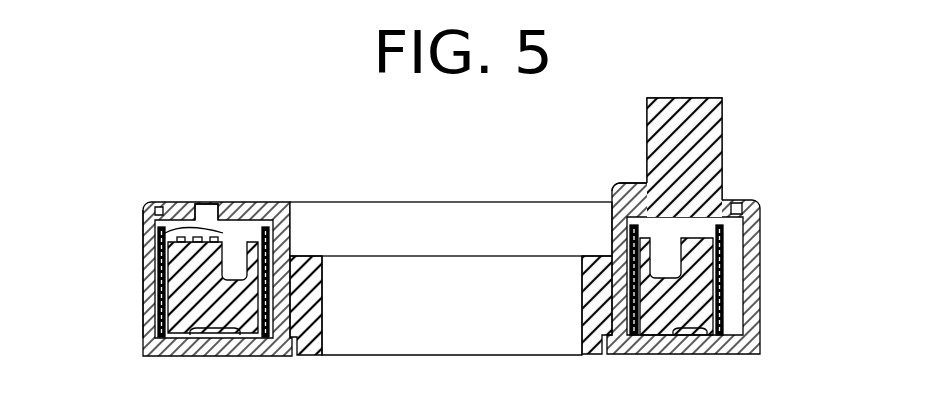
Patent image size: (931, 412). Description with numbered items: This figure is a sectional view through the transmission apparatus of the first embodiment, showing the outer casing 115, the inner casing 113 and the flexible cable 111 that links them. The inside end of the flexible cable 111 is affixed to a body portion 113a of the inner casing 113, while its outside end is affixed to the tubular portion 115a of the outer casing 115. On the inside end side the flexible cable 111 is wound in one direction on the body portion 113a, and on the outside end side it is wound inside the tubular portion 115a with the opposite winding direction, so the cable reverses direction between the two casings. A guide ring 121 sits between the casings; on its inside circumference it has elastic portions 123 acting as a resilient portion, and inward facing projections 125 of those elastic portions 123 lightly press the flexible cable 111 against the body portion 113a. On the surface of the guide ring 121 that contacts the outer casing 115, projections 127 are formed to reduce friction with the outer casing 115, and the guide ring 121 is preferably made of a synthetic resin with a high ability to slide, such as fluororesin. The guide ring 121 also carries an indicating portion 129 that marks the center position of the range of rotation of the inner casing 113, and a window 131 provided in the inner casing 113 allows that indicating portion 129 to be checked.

The flexible cable 111 is at (721, 233).
The inner casing 113 is at (250, 200).
The body portion 113a is at (323, 264).
The outer casing 115 is at (226, 356).
The tubular portion 115a is at (144, 308).
The guide ring 121 is at (712, 296).
The elastic portions 123 is at (648, 245).
The inward facing projections 125 is at (642, 216).
The projections 127 is at (698, 355).
The indicating portion 129 is at (160, 231).
The window 131 is at (206, 203).